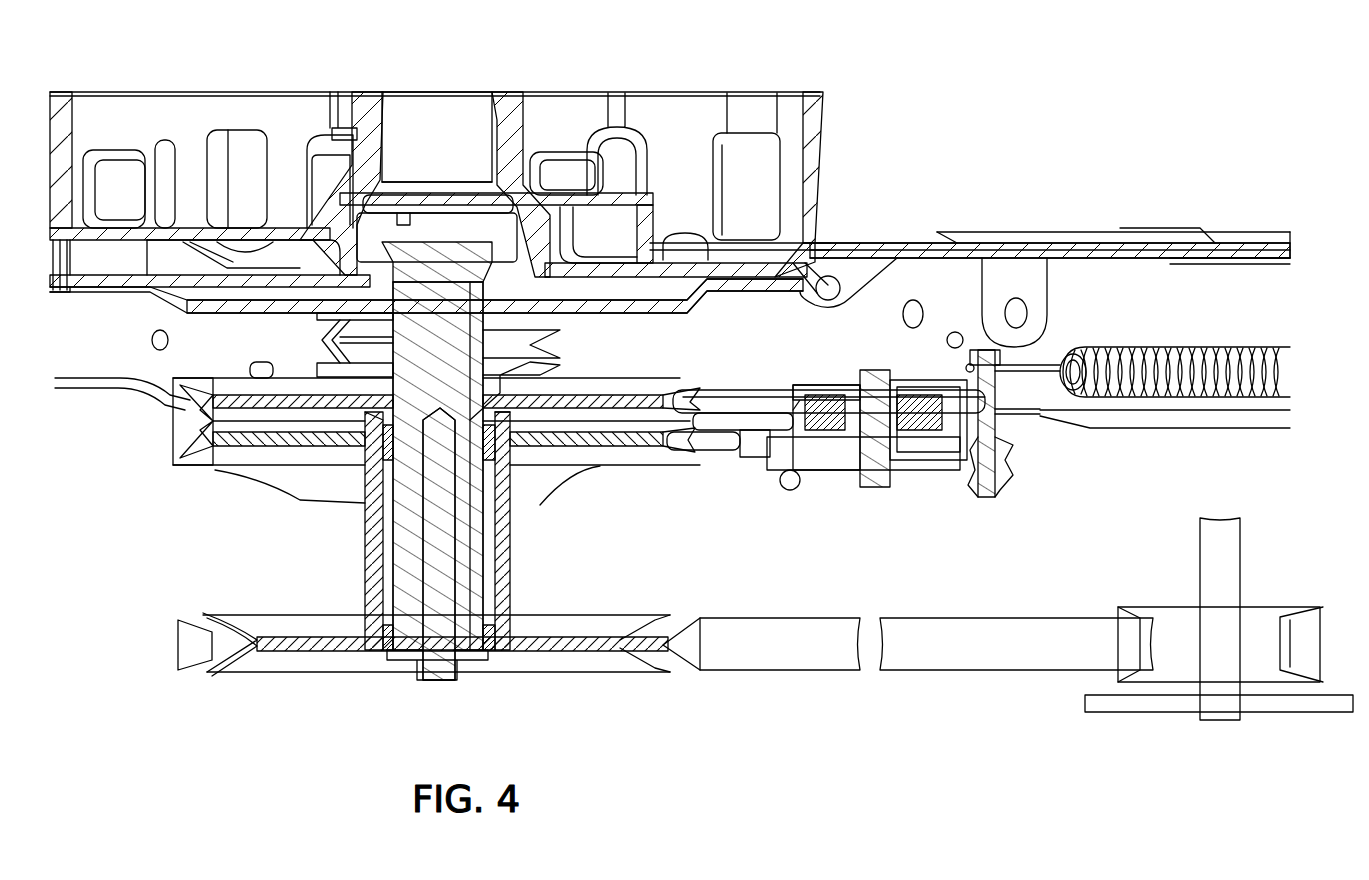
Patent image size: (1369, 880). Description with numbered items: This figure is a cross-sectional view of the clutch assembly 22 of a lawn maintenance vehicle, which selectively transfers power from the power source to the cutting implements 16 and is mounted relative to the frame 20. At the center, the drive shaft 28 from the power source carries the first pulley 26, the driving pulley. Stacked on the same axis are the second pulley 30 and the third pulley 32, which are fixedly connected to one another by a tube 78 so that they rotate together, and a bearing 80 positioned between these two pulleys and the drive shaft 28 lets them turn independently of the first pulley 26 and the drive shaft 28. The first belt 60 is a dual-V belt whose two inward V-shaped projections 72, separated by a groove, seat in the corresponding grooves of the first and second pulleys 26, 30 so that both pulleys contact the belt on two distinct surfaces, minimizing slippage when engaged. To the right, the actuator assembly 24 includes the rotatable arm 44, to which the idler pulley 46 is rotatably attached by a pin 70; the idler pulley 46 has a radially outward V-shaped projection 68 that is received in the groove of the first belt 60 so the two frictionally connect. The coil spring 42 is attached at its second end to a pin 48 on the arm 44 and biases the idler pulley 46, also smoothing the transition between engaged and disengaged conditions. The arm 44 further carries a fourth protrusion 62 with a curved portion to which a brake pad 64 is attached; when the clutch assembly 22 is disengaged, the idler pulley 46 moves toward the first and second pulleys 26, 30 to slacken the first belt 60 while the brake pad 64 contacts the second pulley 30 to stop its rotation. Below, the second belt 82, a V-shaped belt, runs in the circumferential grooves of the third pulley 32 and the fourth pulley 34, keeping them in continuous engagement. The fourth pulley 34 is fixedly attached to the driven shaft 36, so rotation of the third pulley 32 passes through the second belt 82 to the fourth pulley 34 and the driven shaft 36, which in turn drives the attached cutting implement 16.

The cutting implement 16 is at (1110, 715).
The frame 20 is at (915, 270).
The clutch assembly 22 is at (113, 572).
The actuator assembly 24 is at (1113, 316).
The first pulley 26 is at (600, 380).
The drive shaft 28 is at (445, 313).
The second pulley 30 is at (632, 465).
The third pulley 32 is at (590, 615).
The fourth pulley 34 is at (1170, 610).
The driven shaft 36 is at (1240, 540).
The spring 42 is at (1190, 370).
The rotatable arm 44 is at (936, 482).
The idler pulley 46 is at (808, 392).
The pin 48 is at (1000, 388).
The first belt 60 is at (738, 390).
The fourth protrusion 62 is at (772, 445).
The brake pad 64 is at (748, 445).
The V-shaped projection 68 is at (940, 395).
The pin 70 is at (880, 470).
The V-shaped projections 72 is at (196, 398).
The tube 78 is at (365, 552).
The bearing 80 is at (498, 470).
The second belt 82 is at (795, 650).